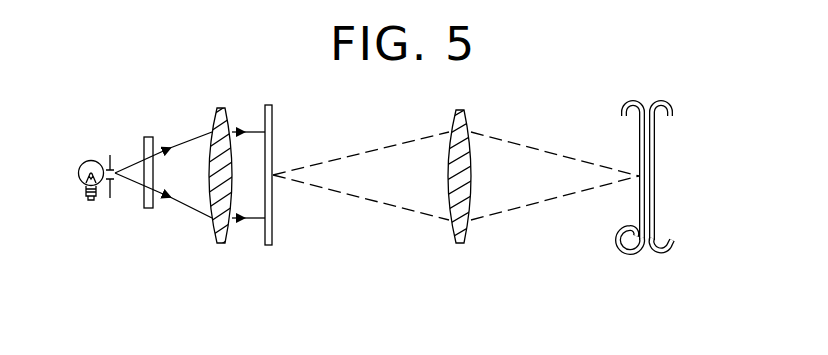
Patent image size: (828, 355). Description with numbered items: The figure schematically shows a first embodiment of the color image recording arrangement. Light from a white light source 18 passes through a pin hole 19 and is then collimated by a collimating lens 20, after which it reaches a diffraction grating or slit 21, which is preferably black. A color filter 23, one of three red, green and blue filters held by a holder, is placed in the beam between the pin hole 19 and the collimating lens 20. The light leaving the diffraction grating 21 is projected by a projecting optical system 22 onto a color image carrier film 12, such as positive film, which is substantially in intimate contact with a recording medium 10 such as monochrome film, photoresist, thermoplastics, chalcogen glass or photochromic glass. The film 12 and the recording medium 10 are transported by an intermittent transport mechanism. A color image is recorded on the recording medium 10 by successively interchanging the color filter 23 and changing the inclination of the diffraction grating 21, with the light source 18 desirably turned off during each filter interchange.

The recording medium 10 is at (663, 255).
The color image carrier film 12 is at (622, 254).
The white light source 18 is at (87, 161).
The pin hole 19 is at (113, 190).
The collimating lens 20 is at (221, 243).
The diffraction grating or slit 21 is at (267, 245).
The projecting optical system 22 is at (457, 243).
The color filter 23 is at (148, 137).